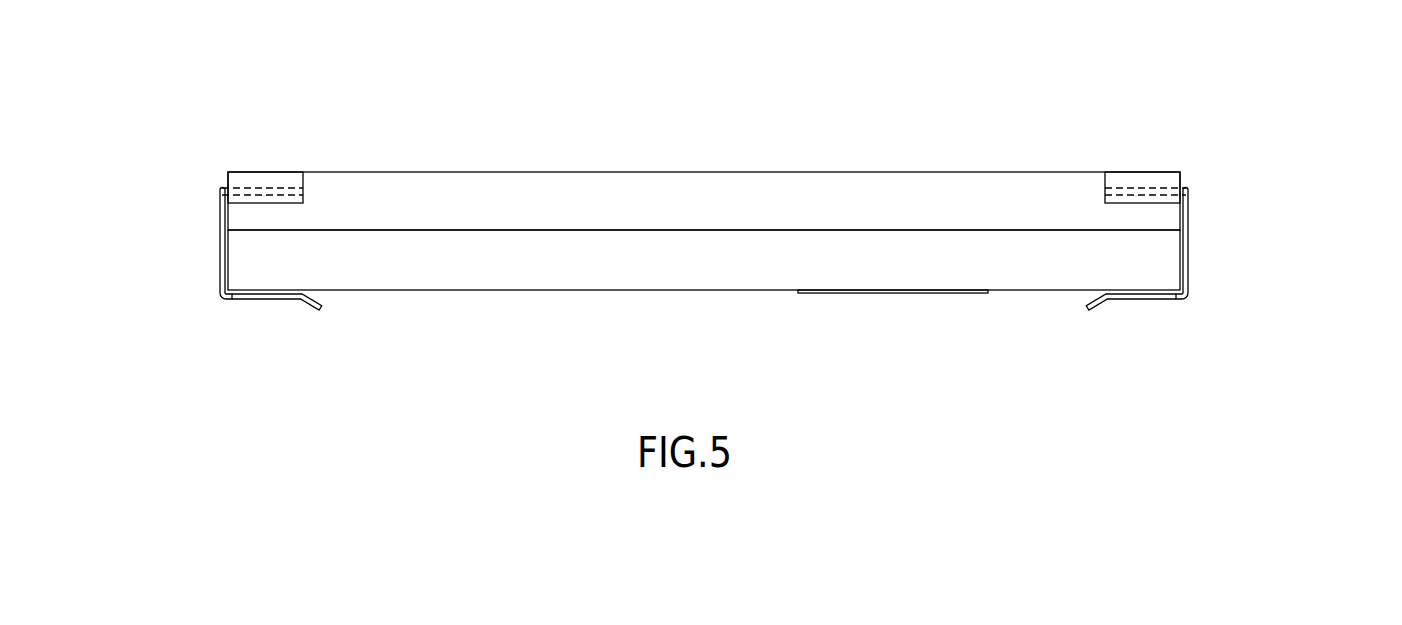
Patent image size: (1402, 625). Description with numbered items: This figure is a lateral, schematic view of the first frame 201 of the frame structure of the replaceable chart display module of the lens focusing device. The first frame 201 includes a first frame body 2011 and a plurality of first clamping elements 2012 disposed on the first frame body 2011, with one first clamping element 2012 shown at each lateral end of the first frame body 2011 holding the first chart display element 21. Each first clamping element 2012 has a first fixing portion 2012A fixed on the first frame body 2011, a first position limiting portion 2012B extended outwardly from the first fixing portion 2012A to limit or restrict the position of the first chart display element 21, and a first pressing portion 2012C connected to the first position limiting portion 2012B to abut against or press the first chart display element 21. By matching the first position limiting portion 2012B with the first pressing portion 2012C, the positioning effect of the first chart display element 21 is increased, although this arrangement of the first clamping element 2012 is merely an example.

The first frame 201 is at (198, 53).
The first frame body 2011 is at (680, 195).
The first chart display element 21 is at (686, 275).
The first clamping element 2012 is at (107, 147).
The first fixing portion 2012A is at (262, 187).
The first position limiting portion 2012B is at (220, 240).
The first pressing portion 2012C is at (268, 300).